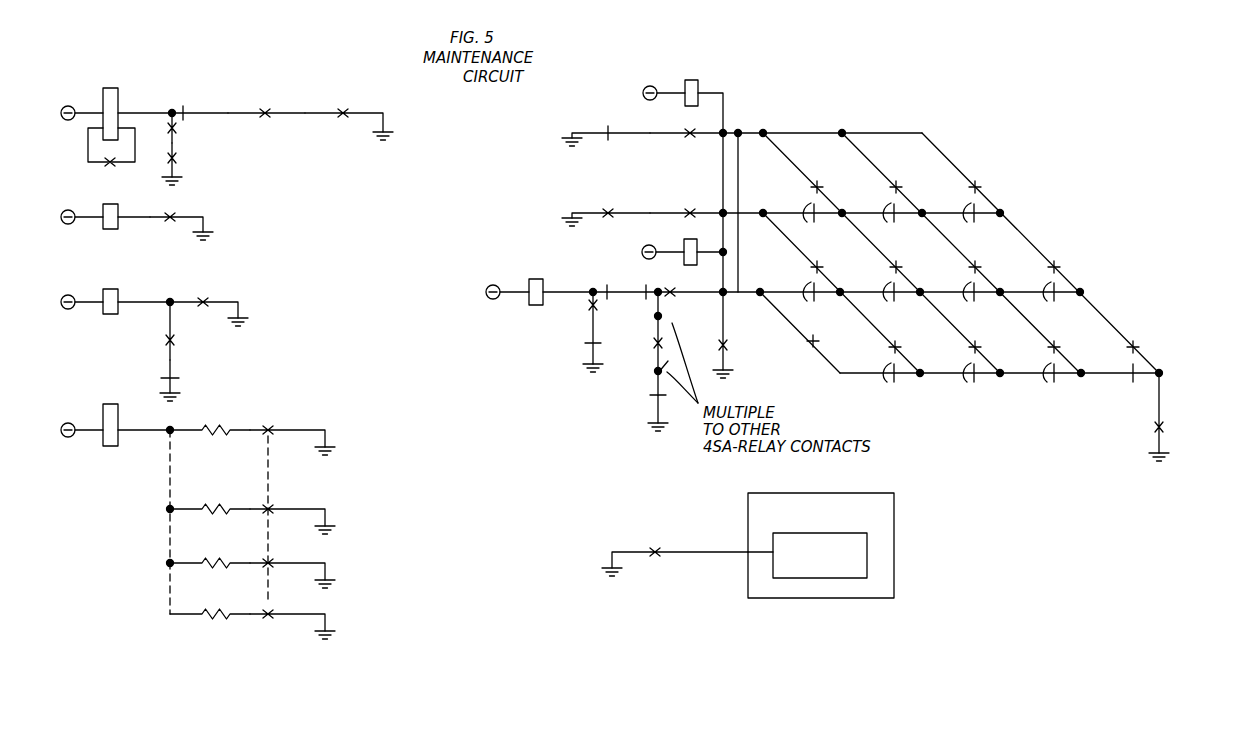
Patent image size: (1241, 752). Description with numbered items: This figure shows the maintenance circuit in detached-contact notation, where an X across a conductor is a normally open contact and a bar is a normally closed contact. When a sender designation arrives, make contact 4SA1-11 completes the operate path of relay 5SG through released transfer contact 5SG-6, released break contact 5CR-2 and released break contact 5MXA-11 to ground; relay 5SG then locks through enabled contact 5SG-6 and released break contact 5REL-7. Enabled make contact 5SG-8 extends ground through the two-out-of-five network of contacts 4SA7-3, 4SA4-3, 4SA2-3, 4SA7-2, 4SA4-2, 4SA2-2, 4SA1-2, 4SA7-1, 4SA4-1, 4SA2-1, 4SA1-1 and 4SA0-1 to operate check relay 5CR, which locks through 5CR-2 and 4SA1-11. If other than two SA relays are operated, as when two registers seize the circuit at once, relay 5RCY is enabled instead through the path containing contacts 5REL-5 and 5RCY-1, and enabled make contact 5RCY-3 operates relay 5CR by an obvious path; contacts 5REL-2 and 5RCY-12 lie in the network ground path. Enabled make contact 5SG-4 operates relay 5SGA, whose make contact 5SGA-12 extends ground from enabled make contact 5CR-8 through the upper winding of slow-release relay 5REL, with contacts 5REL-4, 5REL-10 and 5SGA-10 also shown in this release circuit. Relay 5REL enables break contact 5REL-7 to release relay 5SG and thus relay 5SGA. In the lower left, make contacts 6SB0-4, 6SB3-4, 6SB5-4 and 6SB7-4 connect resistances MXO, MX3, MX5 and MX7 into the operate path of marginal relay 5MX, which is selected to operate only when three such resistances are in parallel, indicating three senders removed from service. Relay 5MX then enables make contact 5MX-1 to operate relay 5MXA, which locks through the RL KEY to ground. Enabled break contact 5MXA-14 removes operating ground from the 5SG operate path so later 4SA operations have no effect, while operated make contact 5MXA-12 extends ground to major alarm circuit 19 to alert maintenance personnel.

The release relay 5REL is at (116, 103).
The contact of relay 5REL 5REL-10 is at (105, 157).
The contact of relay 5REL 5REL-4 is at (185, 117).
The make contact of relay 5SGA 5SGA-12 is at (266, 104).
The make contact of relay 5CR 5CR-8 is at (349, 115).
The contact of relay 5SGA 5SGA-10 is at (205, 164).
The relay 5SGA is at (105, 227).
The make contact of relay 5SG 5SG-4 is at (181, 216).
The relay 5MXA is at (117, 291).
The make contact of relay 5MX 5MX-1 is at (209, 300).
The break contact of relay 5MXA 5MXA-11 is at (208, 331).
The release key RL KEY is at (199, 380).
The marginal relay 5MX is at (117, 498).
The MX resistance MXO is at (210, 418).
The make contact of relay 6SB0 6SB0-4 is at (292, 503).
The MX resistance MX3 is at (210, 498).
The make contact of relay 6SB3 6SB3-4 is at (291, 509).
The MX resistance MX5 is at (210, 553).
The make contact of relay 6SB5 6SB5-4 is at (291, 563).
The MX resistance MX7 is at (210, 604).
The make contact of relay 6SB7 6SB7-4 is at (291, 614).
The relay 5RCY is at (683, 96).
The contact of relay 5REL 5REL-5 is at (606, 125).
The contact of relay 5RCY 5RCY-1 is at (688, 143).
The contact of relay 5REL 5REL-2 is at (606, 206).
The contact of relay 5RCY 5RCY-12 is at (688, 201).
The relay 5CR is at (684, 244).
The make contact of relay 5RCY 5RCY-3 is at (747, 255).
The relay 5SG is at (541, 281).
The transfer contact of relay 5SG 5SG-6 is at (617, 283).
The break contact of relay 5CR 5CR-2 is at (684, 282).
The break contact of relay 5REL 5REL-7 is at (560, 332).
The make contact of relay 4SA1 4SA1-11 is at (652, 344).
The break contact of relay 5MXA 5MXA-14 is at (652, 402).
The make contact of relay 4SA7 4SA7-3 is at (819, 222).
The make contact of relay 4SA4 4SA4-3 is at (897, 222).
The make contact of relay 4SA2 4SA2-3 is at (977, 222).
The make contact of relay 4SA7 4SA7-2 is at (820, 302).
The make contact of relay 4SA4 4SA4-2 is at (899, 302).
The make contact of relay 4SA2 4SA2-2 is at (979, 302).
The make contact of relay 4SA1 4SA1-2 is at (1060, 302).
The make contact of relay 4SA7 4SA7-1 is at (807, 352).
The make contact of relay 4SA4 4SA4-1 is at (902, 384).
The make contact of relay 4SA2 4SA2-1 is at (992, 384).
The make contact of relay 4SA1 4SA1-1 is at (1077, 384).
The make contact of relay 4SA0 4SA0-1 is at (1140, 358).
The make contact of relay 5SG 5SG-8 is at (1183, 417).
The make contact of relay 5MXA 5MXA-12 is at (675, 551).
The major alarm circuit 19 is at (894, 502).